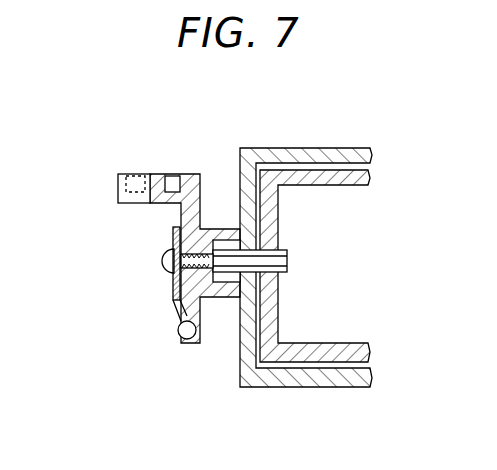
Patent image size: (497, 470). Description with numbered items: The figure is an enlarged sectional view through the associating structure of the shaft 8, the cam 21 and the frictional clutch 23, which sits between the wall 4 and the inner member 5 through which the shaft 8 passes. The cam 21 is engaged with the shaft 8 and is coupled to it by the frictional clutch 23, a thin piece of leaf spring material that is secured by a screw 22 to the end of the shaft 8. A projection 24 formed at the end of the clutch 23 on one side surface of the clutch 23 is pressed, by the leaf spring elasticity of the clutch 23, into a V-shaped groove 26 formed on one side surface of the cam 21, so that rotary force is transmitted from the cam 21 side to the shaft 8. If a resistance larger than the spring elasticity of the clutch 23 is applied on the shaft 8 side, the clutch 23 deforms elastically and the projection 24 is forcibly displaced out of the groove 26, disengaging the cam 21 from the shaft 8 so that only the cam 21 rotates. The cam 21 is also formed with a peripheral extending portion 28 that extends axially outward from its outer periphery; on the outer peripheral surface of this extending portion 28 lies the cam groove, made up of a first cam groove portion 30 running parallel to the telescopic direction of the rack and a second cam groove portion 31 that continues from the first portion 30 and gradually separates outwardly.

The frame wall 4 is at (333, 148).
The inner channel member 5 is at (360, 185).
The shaft 8 is at (288, 264).
The cam 21 is at (196, 176).
The screw 22 is at (165, 262).
The frictional clutch 23 is at (172, 298).
The projection 24 is at (191, 345).
The V-shaped groove 26 is at (180, 323).
The peripheral extending portion 28 is at (122, 175).
The first cam groove portion 30 is at (172, 176).
The second cam groove portion 31 is at (133, 174).